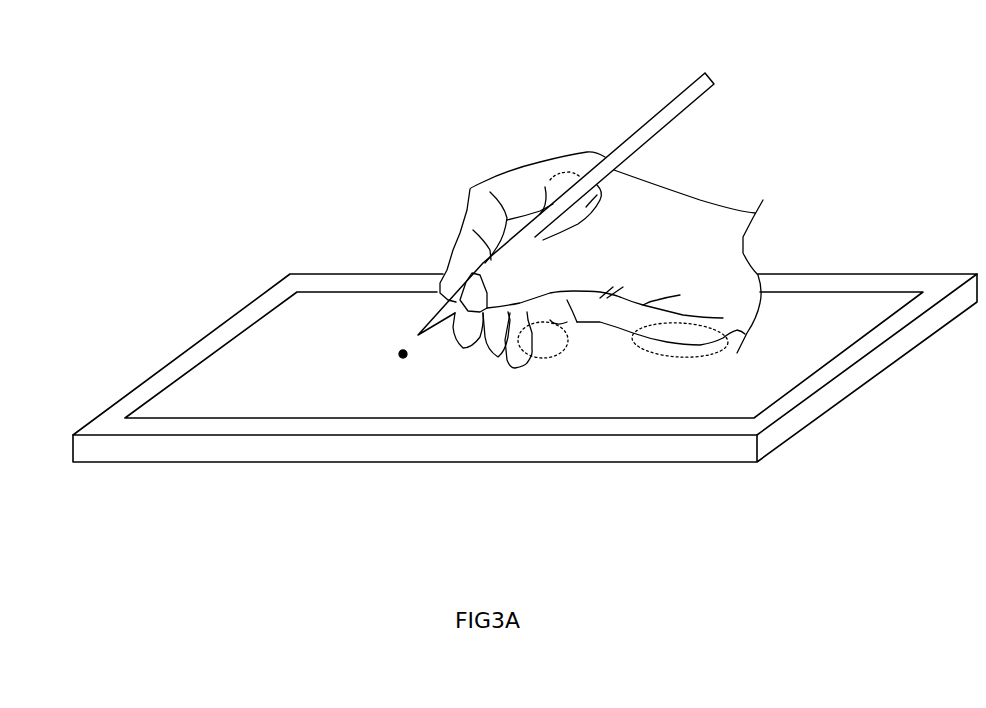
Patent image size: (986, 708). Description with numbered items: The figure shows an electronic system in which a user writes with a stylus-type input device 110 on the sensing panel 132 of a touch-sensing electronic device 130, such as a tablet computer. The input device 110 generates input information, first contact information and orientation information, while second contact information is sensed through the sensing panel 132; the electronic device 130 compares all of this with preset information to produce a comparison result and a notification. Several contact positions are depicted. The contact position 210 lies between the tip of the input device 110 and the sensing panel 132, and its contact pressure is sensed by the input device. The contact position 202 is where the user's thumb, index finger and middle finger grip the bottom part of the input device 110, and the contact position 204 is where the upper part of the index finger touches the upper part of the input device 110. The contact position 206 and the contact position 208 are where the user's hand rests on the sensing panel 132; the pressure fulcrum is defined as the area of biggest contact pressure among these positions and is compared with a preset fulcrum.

The input device 110 is at (680, 103).
The electronic device 130 is at (288, 272).
The sensing panel 132 is at (250, 343).
The contact position 202 is at (430, 298).
The contact position 204 is at (579, 178).
The contact position 206 is at (542, 357).
The contact position 208 is at (677, 358).
The contact position 210 is at (398, 362).